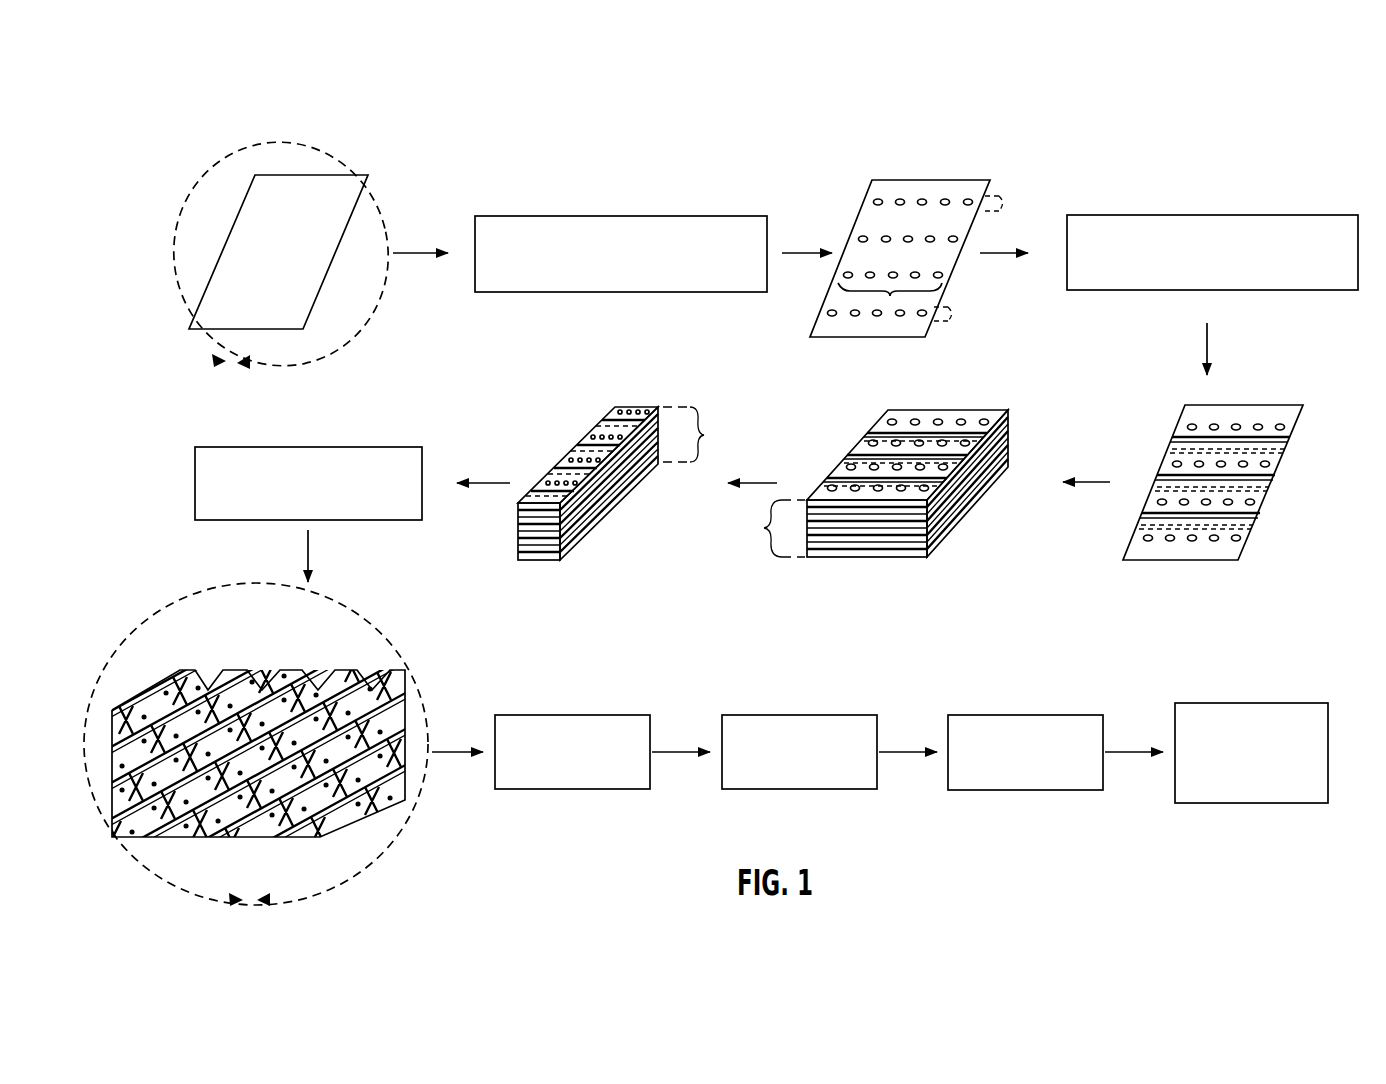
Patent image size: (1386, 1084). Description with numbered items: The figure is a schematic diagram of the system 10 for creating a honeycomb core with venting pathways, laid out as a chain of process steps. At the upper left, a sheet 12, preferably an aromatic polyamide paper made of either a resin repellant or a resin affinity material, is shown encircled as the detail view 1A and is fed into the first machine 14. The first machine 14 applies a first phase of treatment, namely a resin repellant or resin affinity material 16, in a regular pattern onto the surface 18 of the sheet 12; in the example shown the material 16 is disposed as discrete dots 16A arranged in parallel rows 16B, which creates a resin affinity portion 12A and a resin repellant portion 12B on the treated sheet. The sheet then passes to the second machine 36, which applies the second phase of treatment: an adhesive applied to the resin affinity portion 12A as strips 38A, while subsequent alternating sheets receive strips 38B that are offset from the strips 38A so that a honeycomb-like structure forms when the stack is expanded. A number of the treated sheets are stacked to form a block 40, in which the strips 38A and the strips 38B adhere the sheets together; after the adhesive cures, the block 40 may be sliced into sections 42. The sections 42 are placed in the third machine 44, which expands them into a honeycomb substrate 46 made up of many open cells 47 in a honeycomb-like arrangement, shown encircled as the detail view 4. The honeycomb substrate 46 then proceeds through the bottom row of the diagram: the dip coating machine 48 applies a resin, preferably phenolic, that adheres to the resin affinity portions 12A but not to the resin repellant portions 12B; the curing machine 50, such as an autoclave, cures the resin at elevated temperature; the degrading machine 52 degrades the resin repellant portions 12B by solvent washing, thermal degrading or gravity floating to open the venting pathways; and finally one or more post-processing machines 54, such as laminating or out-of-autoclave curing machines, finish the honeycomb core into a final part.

The system 10 is at (1322, 120).
The sheet 12 is at (312, 175).
The surface 18 is at (337, 182).
The FIG. 1A detail view 1A is at (307, 347).
The first machine 14 is at (528, 216).
The resin repellant or resin affinity material 16 is at (980, 186).
The discrete dots 16A is at (923, 198).
The parallel rows 16B is at (993, 261).
The resin affinity portion 12A is at (947, 262).
The resin repellant portion 12B is at (890, 296).
The second machine 36 is at (1307, 215).
The adhesive strips 38A is at (947, 427).
The offset adhesive strips 38B is at (1280, 463).
The block 40 is at (858, 420).
The sections 42 is at (638, 407).
The third machine 44 is at (248, 447).
The FIG. 4 detail view 4 is at (350, 868).
The honeycomb substrate 46 is at (200, 837).
The open cells 47 is at (158, 713).
The dip coating machine 48 is at (548, 715).
The curing machine 50 is at (775, 715).
The degrading machine 52 is at (1050, 715).
The post-processing machines 54 is at (1278, 702).